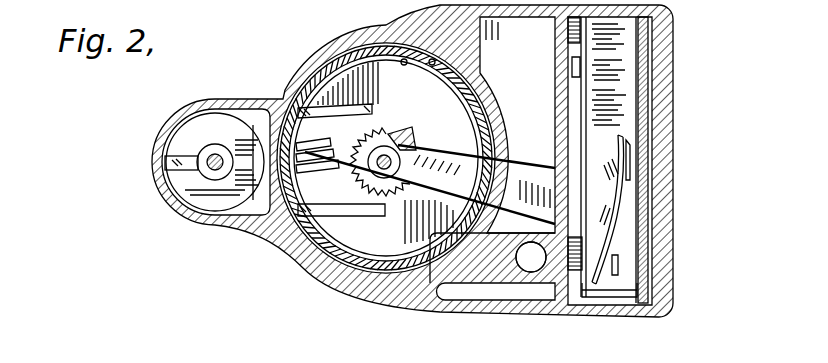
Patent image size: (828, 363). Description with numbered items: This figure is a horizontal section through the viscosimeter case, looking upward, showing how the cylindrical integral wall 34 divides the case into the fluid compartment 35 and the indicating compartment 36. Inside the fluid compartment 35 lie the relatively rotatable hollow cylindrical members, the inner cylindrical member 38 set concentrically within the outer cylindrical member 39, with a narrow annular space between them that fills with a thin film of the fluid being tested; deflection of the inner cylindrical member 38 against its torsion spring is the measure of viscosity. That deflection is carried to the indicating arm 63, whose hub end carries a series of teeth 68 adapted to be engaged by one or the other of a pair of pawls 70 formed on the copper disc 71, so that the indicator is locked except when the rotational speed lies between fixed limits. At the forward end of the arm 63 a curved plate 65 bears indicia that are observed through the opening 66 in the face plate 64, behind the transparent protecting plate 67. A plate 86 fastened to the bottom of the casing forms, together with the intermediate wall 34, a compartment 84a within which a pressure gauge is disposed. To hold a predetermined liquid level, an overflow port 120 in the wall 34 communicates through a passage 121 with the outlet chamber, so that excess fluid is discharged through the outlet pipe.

The integral wall 34 is at (470, 70).
The fluid compartment 35 is at (332, 192).
The indicating compartment 36 is at (594, 140).
The inner cylindrical member 38 is at (404, 66).
The outer cylindrical member 39 is at (432, 66).
The arm 63 is at (466, 160).
The face plate 64 is at (646, 70).
The curved plate 65 is at (628, 150).
The opening 66 is at (637, 160).
The protecting plate 67 is at (410, 150).
The teeth 68 is at (408, 137).
The pawls 70 is at (377, 113).
The copper disc 71 is at (227, 112).
The compartment 84a is at (494, 93).
The plate 86 is at (568, 118).
The overflow port 120 is at (463, 267).
The passage 121 is at (532, 259).